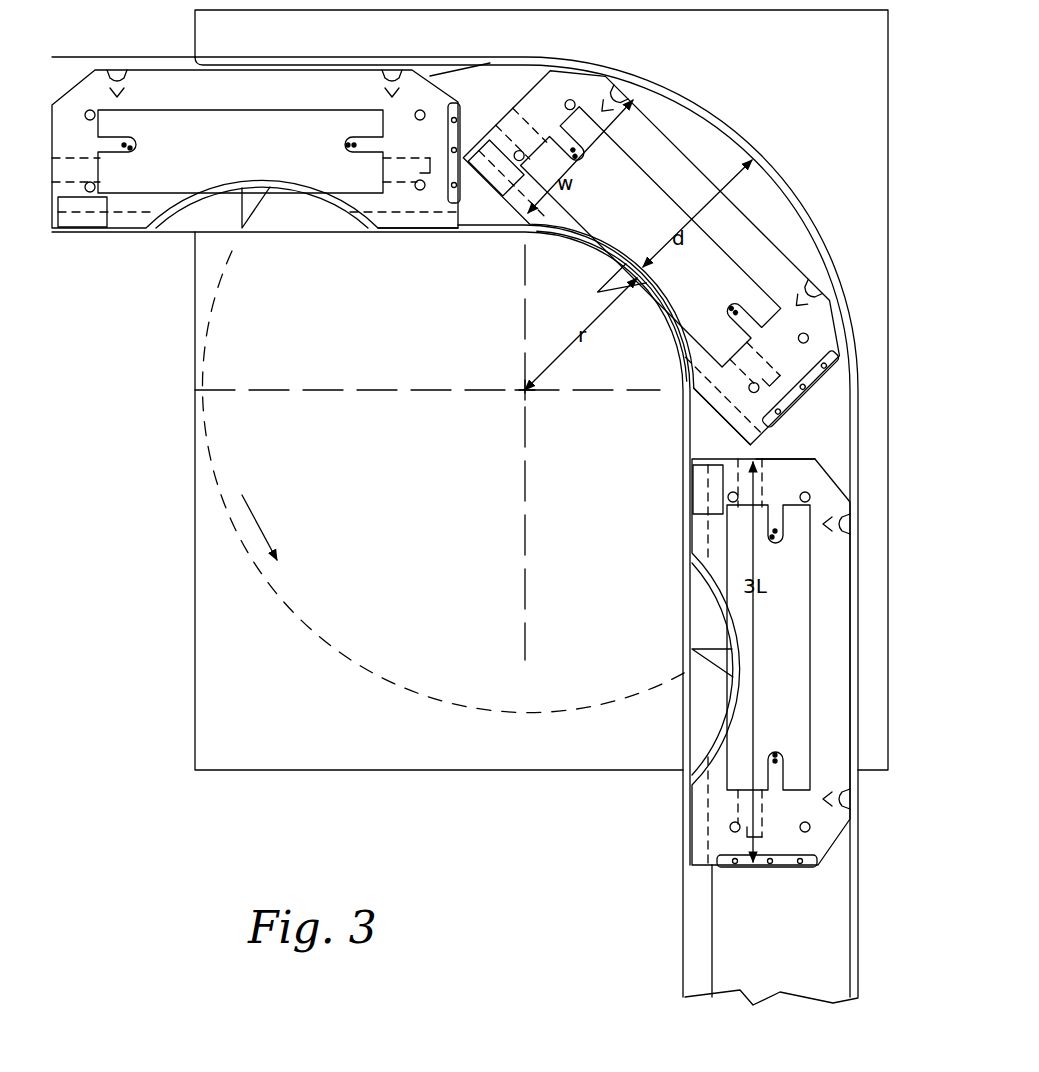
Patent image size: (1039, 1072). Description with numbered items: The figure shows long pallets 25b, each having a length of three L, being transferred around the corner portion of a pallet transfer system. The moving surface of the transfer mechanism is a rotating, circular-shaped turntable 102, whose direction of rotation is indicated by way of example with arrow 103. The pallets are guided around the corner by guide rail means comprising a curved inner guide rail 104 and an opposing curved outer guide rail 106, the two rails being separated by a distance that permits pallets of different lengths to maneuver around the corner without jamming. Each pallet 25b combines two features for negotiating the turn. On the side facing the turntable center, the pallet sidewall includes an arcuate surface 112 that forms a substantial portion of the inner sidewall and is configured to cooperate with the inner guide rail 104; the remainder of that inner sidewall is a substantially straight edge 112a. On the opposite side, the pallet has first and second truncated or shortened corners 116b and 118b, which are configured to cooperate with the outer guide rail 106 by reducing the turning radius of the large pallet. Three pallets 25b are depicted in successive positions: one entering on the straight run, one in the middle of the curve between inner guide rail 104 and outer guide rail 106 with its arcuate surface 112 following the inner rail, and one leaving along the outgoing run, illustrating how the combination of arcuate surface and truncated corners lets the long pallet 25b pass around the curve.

The pallet 25b is at (353, 83).
The turntable 102 is at (430, 580).
The arrow 103 is at (258, 528).
The inner guide rail 104 is at (556, 234).
The outer guide rail 106 is at (693, 103).
The arcuate surface 112 is at (300, 192).
The straight edge 112a is at (395, 230).
The truncated corner 116b is at (90, 82).
The truncated corner 118b is at (460, 90).